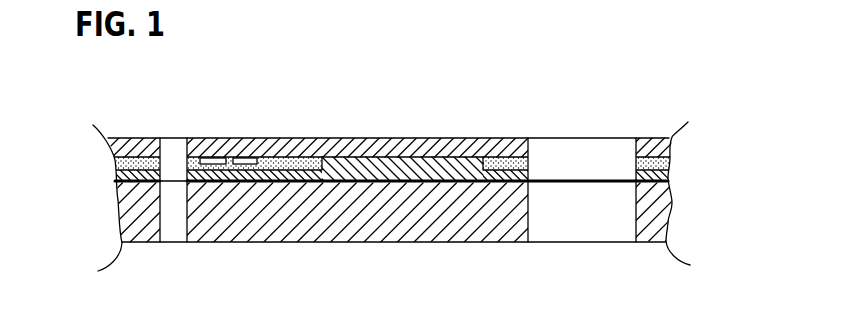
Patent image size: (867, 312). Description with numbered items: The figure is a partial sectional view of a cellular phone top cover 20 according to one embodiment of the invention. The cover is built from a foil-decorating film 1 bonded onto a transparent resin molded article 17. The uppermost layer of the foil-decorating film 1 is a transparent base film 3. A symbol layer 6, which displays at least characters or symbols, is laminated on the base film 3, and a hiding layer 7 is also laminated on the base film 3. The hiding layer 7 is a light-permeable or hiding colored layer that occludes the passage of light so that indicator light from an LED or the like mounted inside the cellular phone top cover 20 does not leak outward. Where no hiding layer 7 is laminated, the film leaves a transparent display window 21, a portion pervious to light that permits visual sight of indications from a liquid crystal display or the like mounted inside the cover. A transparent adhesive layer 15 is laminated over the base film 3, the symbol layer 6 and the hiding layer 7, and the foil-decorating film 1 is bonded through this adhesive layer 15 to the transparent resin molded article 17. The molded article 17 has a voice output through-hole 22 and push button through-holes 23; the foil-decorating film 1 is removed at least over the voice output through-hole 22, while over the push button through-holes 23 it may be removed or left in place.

The foil-decorating film 1 is at (690, 133).
The transparent base film 3 is at (653, 137).
The symbol layer 6 is at (218, 156).
The hiding layer 7 is at (117, 167).
The transparent adhesive layer 15 is at (670, 181).
The transparent resin molded article 17 is at (370, 238).
The cellular phone top cover 20 is at (118, 127).
The transparent display window 21 is at (325, 113).
The voice output through-hole 22 is at (175, 229).
The push button through-holes 23 is at (588, 228).